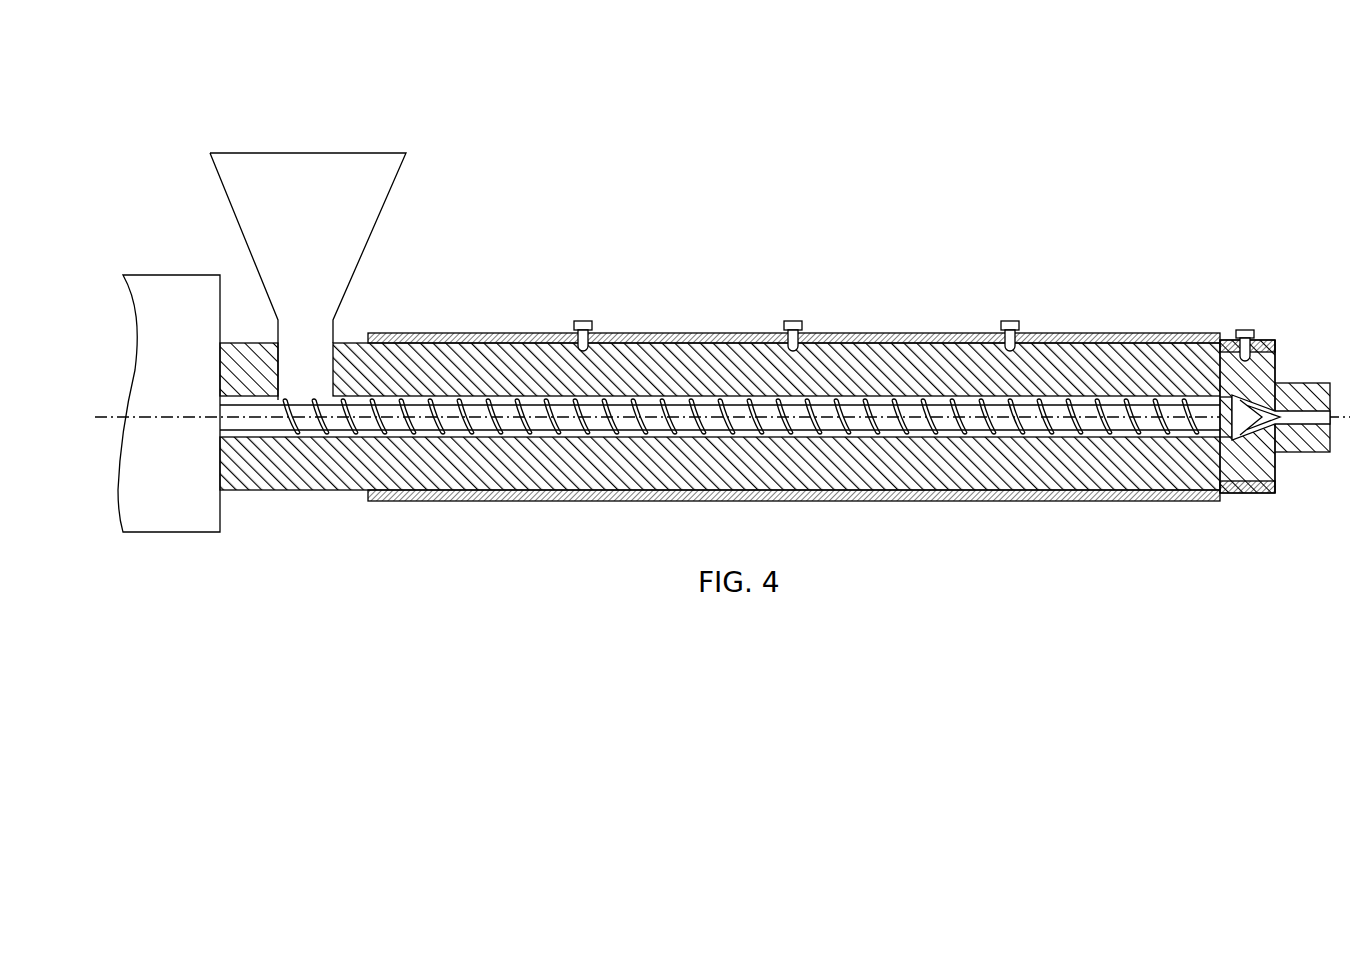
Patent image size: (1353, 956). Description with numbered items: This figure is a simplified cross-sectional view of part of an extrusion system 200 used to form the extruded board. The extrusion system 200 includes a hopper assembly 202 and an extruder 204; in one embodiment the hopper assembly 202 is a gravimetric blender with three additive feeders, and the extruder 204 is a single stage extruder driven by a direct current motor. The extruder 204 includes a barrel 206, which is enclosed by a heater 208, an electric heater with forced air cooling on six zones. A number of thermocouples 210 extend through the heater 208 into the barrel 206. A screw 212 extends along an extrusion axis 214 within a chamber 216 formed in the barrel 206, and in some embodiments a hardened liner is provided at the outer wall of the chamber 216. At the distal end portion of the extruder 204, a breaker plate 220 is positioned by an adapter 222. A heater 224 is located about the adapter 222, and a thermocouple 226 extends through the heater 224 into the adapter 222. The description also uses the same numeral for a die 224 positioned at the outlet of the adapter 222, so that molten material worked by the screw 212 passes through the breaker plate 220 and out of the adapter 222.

The extrusion system 200 is at (150, 179).
The hopper assembly 202 is at (406, 183).
The extruder 204 is at (938, 238).
The barrel 206 is at (515, 333).
The heater 208 is at (675, 333).
The thermocouples 210 is at (592, 325).
The screw 212 is at (480, 432).
The extrusion axis 214 is at (165, 412).
The chamber 216 is at (548, 430).
The breaker plate 220 is at (1278, 386).
The adapter 222 is at (1280, 470).
The heater 224 is at (1276, 342).
The thermocouple 226 is at (1258, 331).